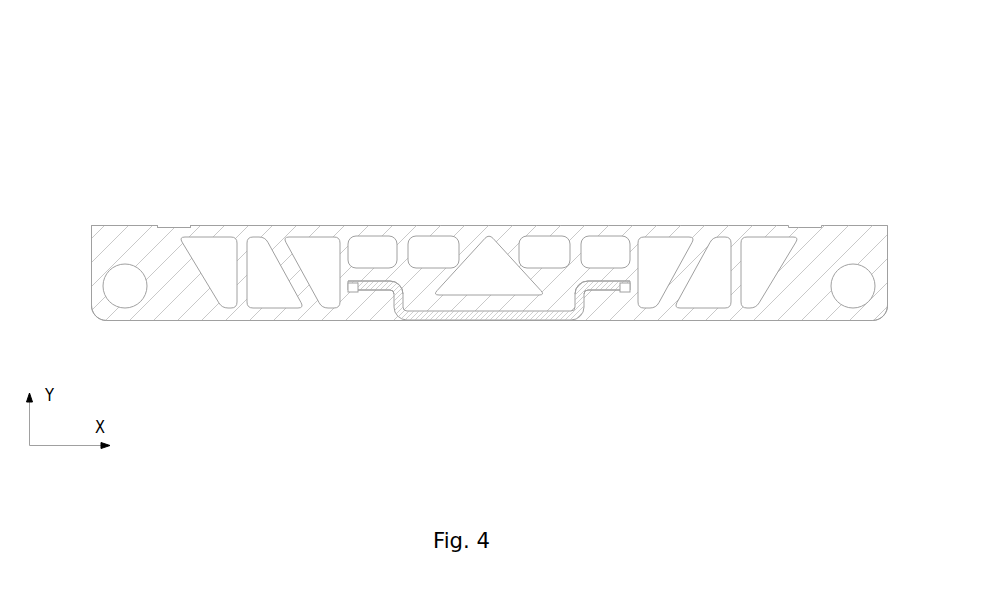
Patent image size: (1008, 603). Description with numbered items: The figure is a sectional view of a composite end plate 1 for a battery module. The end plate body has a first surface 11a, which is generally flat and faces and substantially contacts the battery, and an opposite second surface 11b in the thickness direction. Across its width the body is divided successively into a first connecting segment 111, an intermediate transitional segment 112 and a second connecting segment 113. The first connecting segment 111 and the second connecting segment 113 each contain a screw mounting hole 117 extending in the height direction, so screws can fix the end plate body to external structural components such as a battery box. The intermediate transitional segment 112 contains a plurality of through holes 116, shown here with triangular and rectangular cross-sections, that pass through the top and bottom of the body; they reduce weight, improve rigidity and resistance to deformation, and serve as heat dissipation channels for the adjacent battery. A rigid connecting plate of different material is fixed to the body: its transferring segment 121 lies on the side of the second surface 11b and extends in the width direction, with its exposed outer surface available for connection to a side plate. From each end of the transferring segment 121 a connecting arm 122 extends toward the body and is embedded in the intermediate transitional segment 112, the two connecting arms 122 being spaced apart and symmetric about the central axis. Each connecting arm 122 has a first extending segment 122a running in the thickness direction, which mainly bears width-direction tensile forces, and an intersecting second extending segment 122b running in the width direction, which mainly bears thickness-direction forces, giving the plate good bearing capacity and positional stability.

The composite end plate 1 is at (513, 34).
The first connecting segment 111 is at (130, 238).
The first surface 11a is at (265, 226).
The second surface 11b is at (273, 321).
The intermediate transitional segment 112 is at (525, 229).
The second connecting segment 113 is at (860, 230).
The through hole 116 is at (492, 258).
The screw mounting hole 117 is at (128, 287).
The transferring segment 121 is at (469, 321).
The connecting arm 122 is at (383, 368).
The first extending segment 122a is at (391, 291).
The second extending segment 122b is at (357, 293).